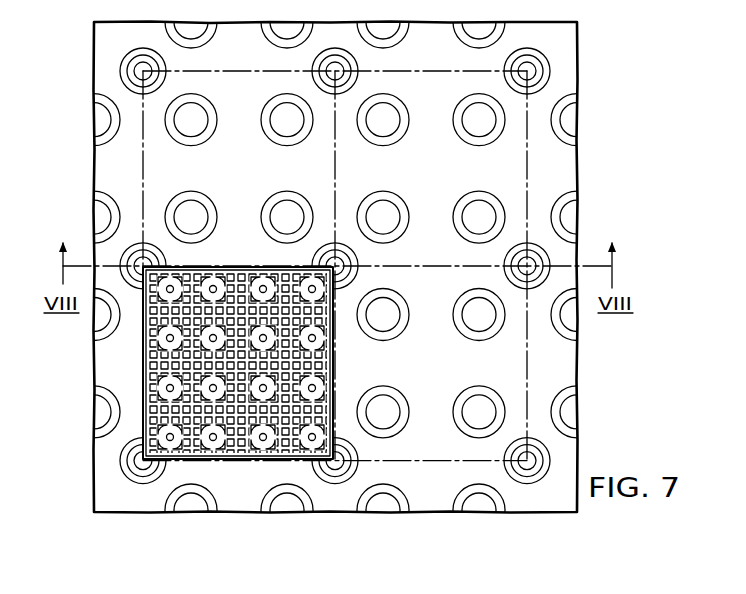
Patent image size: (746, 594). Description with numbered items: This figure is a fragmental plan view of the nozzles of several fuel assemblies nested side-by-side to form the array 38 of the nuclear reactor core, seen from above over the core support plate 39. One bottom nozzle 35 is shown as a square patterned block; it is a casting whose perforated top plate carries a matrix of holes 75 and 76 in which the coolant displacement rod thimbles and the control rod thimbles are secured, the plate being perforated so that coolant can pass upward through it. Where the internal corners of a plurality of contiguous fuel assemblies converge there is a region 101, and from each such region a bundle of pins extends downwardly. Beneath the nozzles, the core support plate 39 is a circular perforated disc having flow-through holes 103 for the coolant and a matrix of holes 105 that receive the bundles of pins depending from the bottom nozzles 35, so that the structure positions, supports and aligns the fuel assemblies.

The bottom nozzle 35 is at (189, 405).
The array 38 is at (529, 373).
The core support plate 39 is at (579, 167).
The hole 75 is at (170, 440).
The hole 76 is at (214, 441).
The region 101 is at (143, 266).
The flow-through hole 103 is at (477, 413).
The hole 105 is at (527, 71).